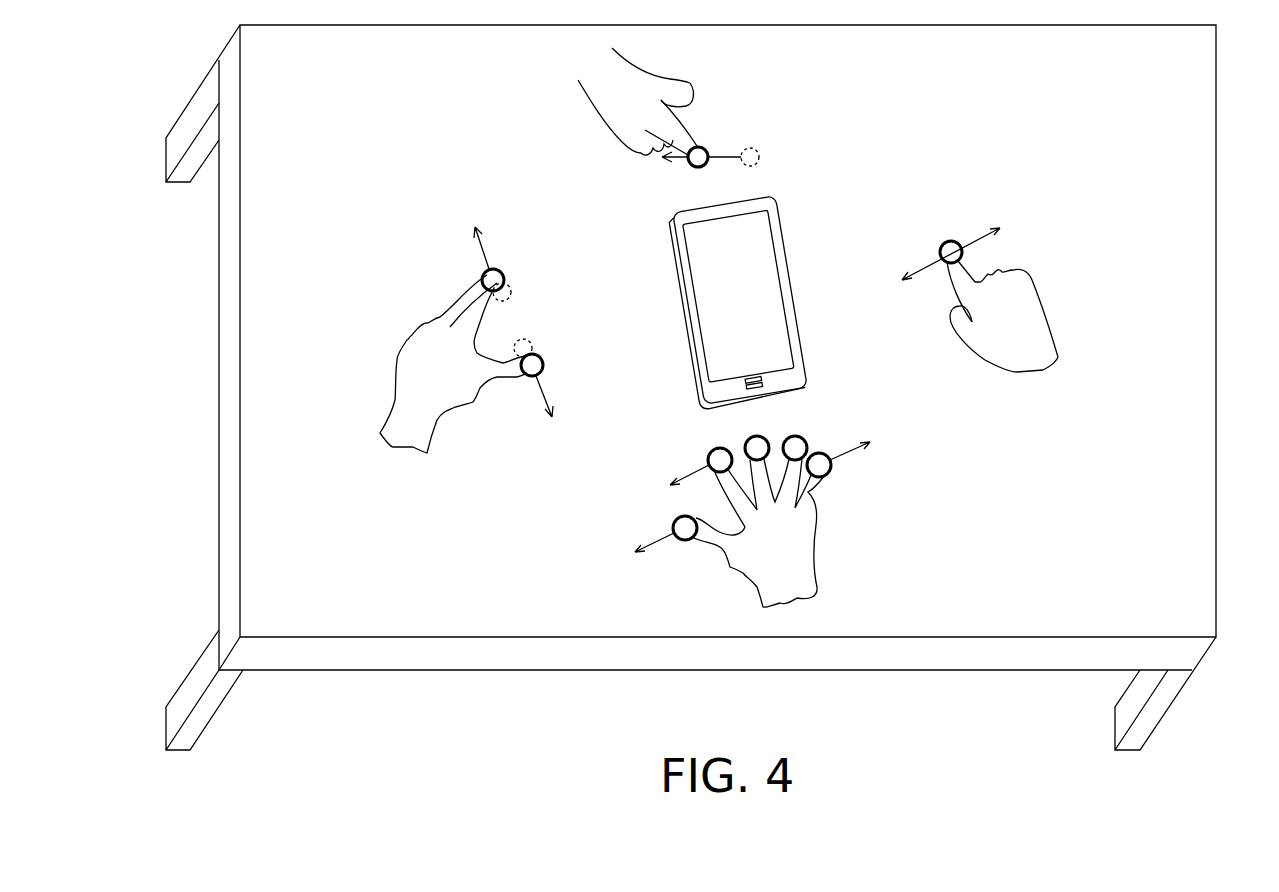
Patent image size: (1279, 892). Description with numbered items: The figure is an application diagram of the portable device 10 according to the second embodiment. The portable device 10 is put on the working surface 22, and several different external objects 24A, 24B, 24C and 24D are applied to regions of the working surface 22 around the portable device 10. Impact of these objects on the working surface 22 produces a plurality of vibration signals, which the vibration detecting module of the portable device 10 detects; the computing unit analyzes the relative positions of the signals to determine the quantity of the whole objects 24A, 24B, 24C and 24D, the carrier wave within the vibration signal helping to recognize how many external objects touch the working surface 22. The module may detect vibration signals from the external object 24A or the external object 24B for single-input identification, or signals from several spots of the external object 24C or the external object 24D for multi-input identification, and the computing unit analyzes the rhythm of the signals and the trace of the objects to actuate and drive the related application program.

The portable device 10 is at (780, 222).
The working surface 22 is at (1216, 88).
The external object 24A is at (1040, 315).
The external object 24B is at (693, 83).
The external object 24C is at (410, 358).
The external object 24D is at (803, 542).